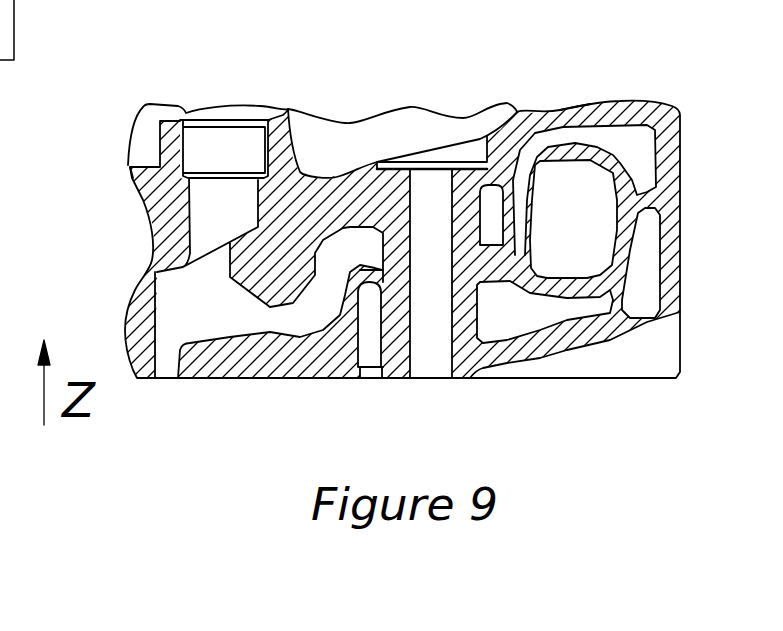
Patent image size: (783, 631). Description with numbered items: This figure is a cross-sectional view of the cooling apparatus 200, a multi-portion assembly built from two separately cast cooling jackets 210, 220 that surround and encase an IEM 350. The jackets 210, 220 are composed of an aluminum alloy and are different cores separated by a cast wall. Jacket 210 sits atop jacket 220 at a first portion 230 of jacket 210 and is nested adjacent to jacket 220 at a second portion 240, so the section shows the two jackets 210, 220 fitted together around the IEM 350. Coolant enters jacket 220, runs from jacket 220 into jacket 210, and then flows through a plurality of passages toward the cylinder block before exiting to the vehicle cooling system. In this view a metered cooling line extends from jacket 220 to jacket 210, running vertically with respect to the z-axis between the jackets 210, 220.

The cooling apparatus 200 is at (663, 84).
The cooling jacket 210 is at (572, 132).
The cooling jacket 220 is at (377, 327).
The first portion 230 is at (677, 393).
The second portion 240 is at (332, 393).
The IEM 350 is at (600, 232).